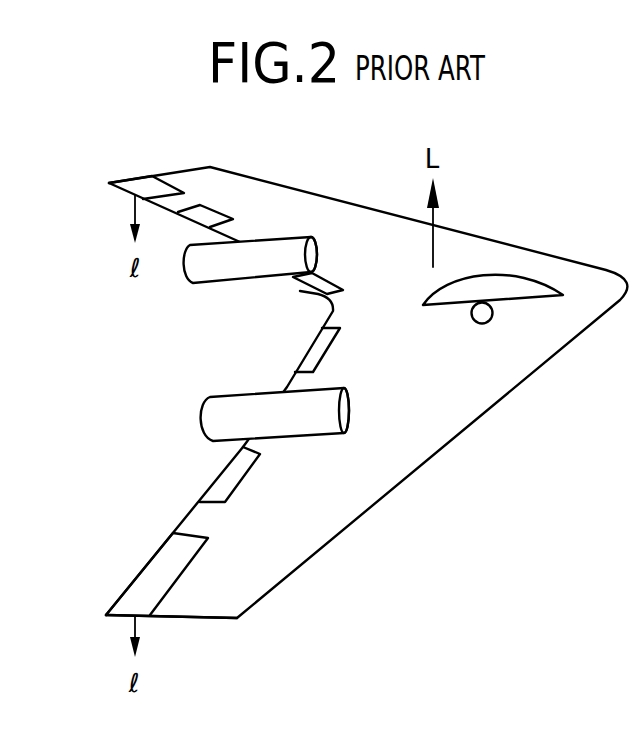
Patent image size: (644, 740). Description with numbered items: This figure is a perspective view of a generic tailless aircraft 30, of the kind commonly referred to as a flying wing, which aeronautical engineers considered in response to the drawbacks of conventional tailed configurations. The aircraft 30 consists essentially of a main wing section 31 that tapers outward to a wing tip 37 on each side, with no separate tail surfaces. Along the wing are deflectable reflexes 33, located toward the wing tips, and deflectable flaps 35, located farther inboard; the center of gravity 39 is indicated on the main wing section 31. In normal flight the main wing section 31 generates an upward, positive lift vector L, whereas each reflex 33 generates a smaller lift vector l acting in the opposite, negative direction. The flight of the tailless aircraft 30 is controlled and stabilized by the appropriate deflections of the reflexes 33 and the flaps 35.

The tailless aircraft 30 is at (468, 158).
The main wing section 31 is at (452, 398).
The deflectable reflexes 33 is at (142, 182).
The deflectable flaps 35 is at (300, 290).
The wing tip 37 is at (213, 620).
The center of gravity 39 is at (485, 323).